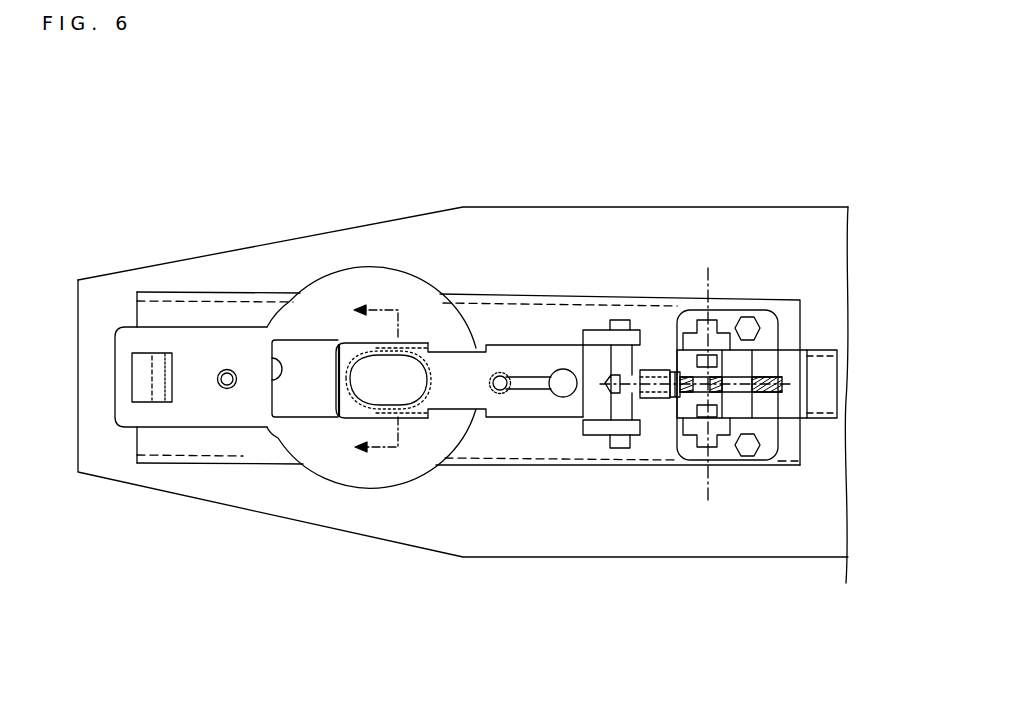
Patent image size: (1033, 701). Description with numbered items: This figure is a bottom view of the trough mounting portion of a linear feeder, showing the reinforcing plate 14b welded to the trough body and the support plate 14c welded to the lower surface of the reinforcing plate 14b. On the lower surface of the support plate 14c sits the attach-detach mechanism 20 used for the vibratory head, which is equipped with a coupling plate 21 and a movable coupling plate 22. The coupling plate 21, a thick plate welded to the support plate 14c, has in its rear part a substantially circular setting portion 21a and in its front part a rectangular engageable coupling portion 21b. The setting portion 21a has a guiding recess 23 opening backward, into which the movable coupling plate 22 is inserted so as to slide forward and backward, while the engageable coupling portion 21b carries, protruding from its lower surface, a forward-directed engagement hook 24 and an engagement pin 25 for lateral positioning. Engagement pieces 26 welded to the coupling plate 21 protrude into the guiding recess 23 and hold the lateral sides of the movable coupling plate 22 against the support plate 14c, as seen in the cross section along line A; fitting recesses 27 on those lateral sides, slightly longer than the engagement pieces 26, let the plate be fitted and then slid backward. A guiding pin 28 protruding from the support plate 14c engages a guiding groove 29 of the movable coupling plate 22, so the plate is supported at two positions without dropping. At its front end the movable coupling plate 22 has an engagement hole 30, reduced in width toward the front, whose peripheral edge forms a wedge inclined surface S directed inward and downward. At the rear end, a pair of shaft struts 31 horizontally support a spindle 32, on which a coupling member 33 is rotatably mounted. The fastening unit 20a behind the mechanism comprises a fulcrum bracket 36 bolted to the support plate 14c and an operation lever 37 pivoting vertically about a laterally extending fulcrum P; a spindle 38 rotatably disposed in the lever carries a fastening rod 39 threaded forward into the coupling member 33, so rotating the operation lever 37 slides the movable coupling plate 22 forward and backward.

The reinforcing plate 14b is at (685, 207).
The support plate 14c is at (220, 292).
The attach-detach mechanism 20 is at (543, 278).
The fastening unit 20a is at (682, 476).
The coupling plate 21 is at (277, 448).
The setting portion 21a is at (342, 287).
The engageable coupling portion 21b is at (180, 333).
The movable coupling plate 22 is at (549, 409).
The guiding recess 23 is at (272, 358).
The engagement hook 24 is at (142, 404).
The engagement pin 25 is at (227, 391).
The engagement pieces 26 is at (366, 362).
The fitting recesses 27 is at (473, 346).
The guiding pin 28 is at (503, 373).
The guiding groove 29 is at (528, 387).
The engagement hole 30 is at (347, 384).
The shaft struts 31 is at (595, 330).
The spindle 32 is at (637, 413).
The coupling member 33 is at (660, 368).
The fulcrum bracket 36 is at (777, 443).
The operation lever 37 is at (818, 350).
The spindle 38 is at (755, 367).
The fastening rod 39 is at (772, 403).
The A-A line A is at (387, 381).
The wedge inclined surface S is at (370, 407).
The fulcrum P is at (708, 283).